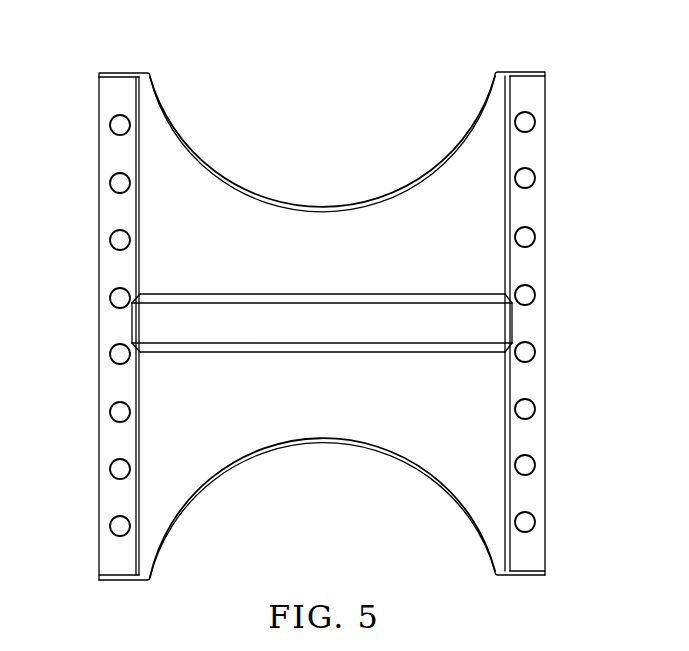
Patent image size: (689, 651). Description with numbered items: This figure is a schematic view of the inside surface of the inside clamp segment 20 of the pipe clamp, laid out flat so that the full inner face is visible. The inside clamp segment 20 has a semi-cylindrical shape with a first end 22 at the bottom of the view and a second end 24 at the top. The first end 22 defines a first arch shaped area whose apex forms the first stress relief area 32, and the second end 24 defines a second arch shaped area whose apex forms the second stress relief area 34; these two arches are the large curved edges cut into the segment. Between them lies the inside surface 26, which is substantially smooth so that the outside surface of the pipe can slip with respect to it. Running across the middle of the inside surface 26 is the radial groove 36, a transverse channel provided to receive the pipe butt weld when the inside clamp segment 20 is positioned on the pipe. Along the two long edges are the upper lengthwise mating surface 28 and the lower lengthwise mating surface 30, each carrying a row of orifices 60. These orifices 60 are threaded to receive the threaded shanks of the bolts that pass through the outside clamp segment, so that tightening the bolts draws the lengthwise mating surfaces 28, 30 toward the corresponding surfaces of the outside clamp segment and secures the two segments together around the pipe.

The inside clamp segment 20 is at (103, 46).
The first end 22 is at (300, 502).
The second end 24 is at (330, 112).
The inside surface 26 is at (221, 427).
The upper lengthwise mating surface 28 is at (529, 331).
The lower lengthwise mating surface 30 is at (112, 330).
The first stress relief area 32 is at (323, 441).
The second stress relief area 34 is at (318, 206).
The radial groove 36 is at (335, 337).
The orifices 60 is at (118, 133).